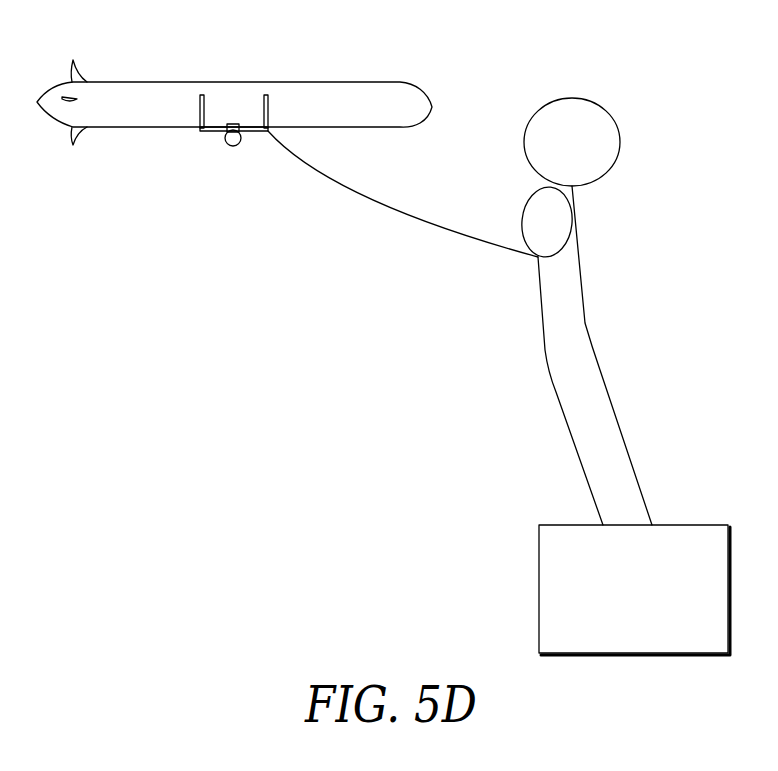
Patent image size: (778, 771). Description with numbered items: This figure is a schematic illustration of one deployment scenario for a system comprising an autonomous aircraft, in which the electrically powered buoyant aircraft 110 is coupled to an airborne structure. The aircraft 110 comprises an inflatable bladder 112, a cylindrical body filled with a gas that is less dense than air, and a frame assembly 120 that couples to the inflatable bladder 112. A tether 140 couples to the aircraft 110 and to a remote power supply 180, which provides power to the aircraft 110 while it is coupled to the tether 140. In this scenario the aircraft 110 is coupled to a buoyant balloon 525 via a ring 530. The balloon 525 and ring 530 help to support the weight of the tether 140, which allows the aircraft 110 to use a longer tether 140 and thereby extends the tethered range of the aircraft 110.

The aircraft 110 is at (234, 102).
The inflatable bladder 112 is at (380, 93).
The frame assembly 120 is at (213, 132).
The tether 140 is at (388, 210).
The buoyant balloon 525 is at (590, 289).
The ring 530 is at (528, 213).
The remote power supply 180 is at (683, 525).